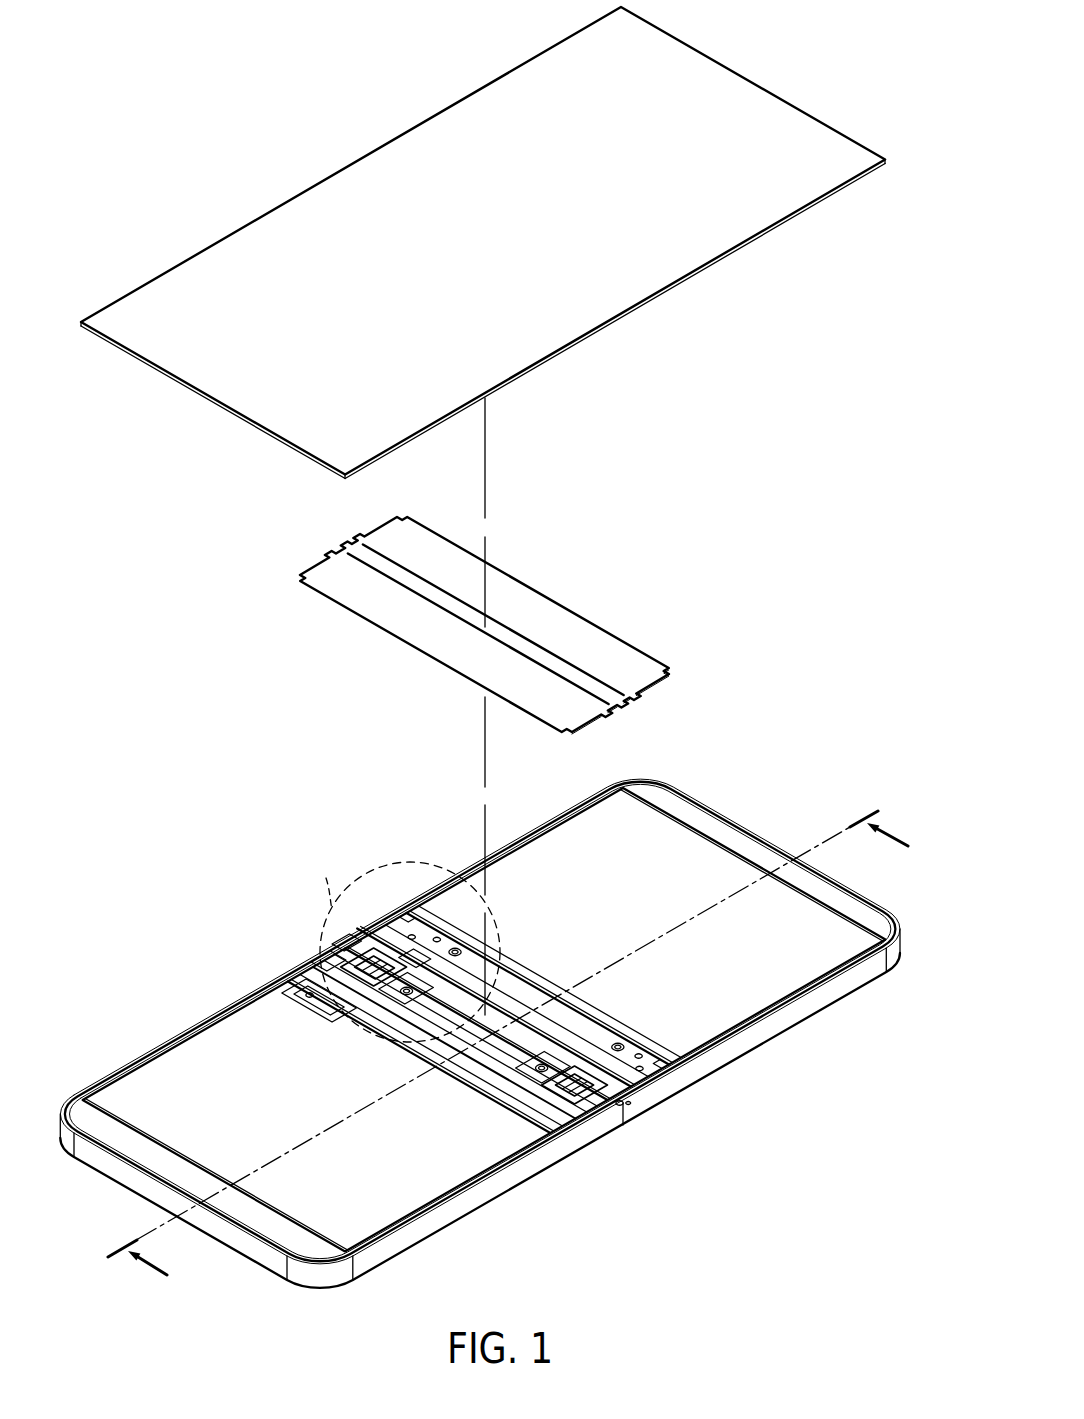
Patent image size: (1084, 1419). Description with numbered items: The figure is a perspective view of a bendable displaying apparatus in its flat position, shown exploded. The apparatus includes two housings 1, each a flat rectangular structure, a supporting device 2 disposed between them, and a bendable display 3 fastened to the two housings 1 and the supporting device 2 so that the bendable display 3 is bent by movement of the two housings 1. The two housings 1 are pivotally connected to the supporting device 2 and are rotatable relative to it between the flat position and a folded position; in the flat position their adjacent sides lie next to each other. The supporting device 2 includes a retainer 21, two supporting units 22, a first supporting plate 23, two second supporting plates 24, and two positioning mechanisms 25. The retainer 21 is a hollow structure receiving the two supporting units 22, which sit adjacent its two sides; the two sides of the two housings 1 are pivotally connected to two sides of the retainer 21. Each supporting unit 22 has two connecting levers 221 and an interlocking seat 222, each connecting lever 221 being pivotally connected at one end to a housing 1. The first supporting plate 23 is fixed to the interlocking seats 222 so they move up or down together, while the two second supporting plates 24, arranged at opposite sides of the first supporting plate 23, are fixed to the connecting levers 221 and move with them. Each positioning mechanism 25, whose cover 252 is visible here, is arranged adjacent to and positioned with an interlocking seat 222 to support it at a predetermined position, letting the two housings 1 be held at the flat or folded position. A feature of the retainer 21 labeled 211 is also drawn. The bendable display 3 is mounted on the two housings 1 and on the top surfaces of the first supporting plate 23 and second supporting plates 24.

The housing 1 is at (790, 1035).
The supporting device 2 is at (357, 925).
The bendable display 3 is at (350, 160).
The retainer 21 is at (514, 1066).
The supporting unit 22 is at (382, 964).
The first supporting plate 23 is at (527, 650).
The second supporting plate 24 is at (591, 648).
The positioning mechanism 25 is at (358, 1025).
The pin hole of hinge base 211 is at (627, 1109).
The connecting lever 221 is at (326, 961).
The interlocking seat 222 is at (346, 944).
The cover 252 is at (415, 959).